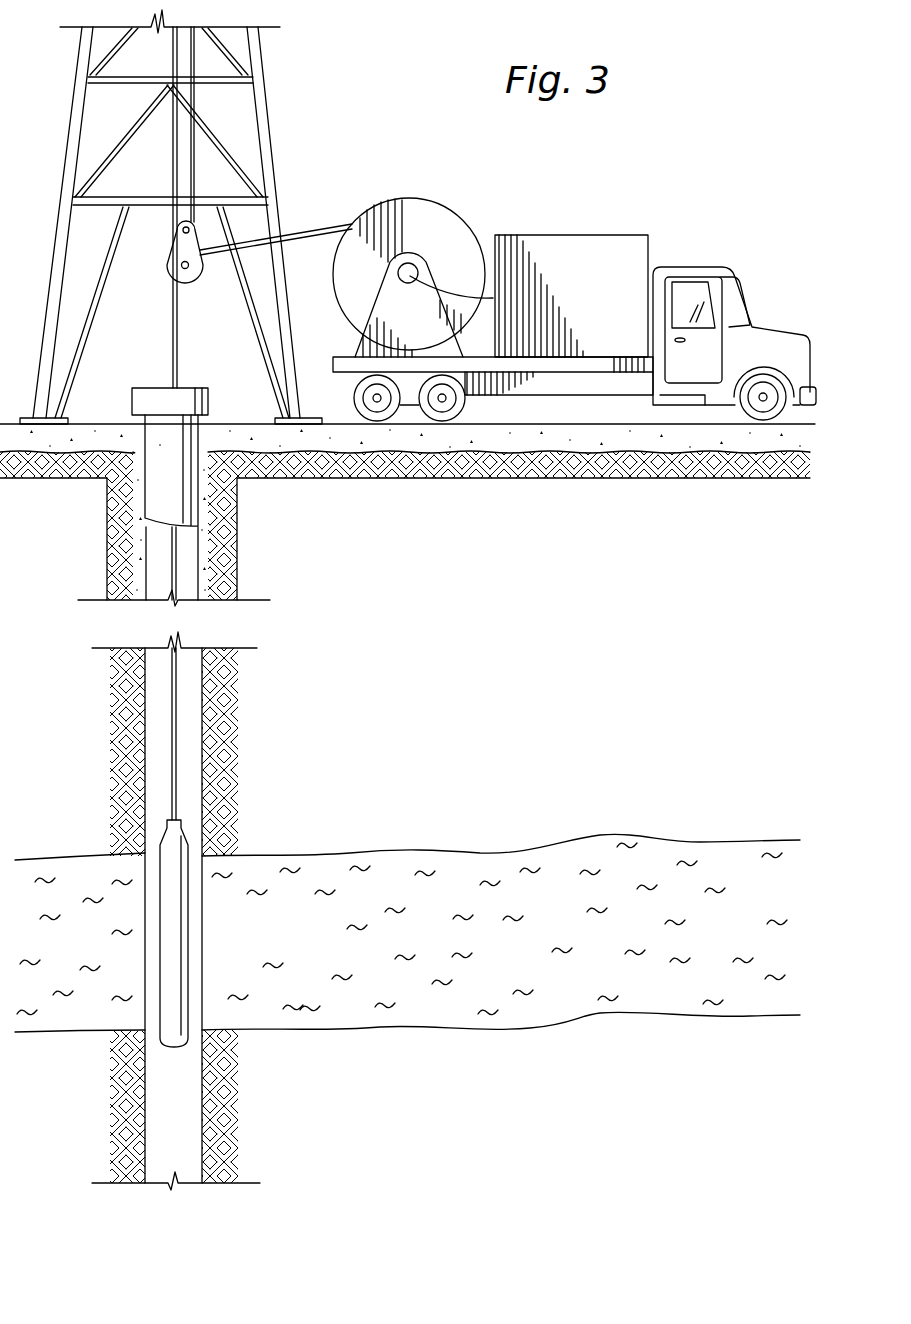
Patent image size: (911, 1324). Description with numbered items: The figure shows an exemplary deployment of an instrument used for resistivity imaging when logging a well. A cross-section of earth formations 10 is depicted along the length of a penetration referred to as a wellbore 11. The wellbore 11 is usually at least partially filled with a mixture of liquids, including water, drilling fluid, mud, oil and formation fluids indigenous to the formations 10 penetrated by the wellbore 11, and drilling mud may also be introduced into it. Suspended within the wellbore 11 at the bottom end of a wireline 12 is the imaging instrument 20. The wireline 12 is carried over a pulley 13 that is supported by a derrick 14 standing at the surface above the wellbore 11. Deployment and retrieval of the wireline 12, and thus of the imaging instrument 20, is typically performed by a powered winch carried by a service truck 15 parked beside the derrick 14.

The earth formations 10 is at (497, 732).
The wellbore 11 is at (176, 708).
The wireline 12 is at (188, 770).
The pulley 13 is at (168, 268).
The derrick 14 is at (270, 108).
The service truck 15 is at (690, 265).
The imaging instrument 20 is at (172, 953).